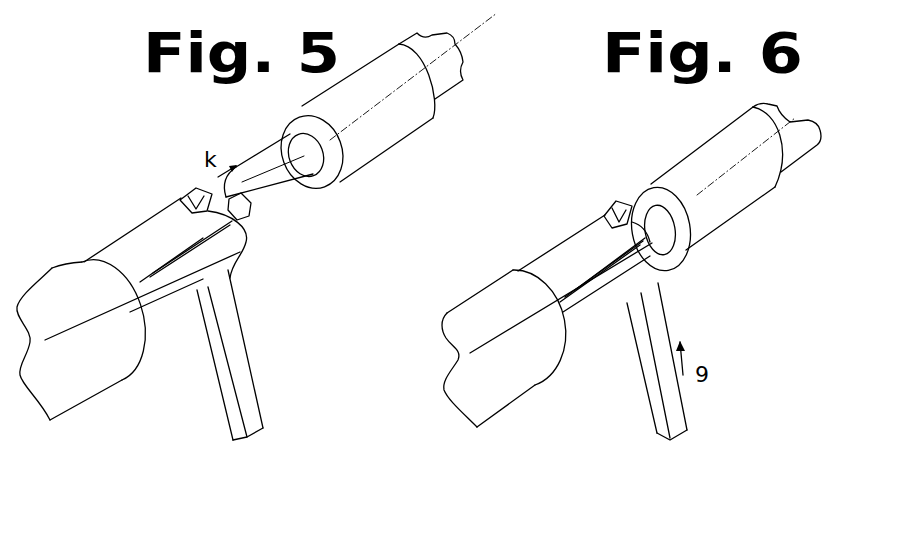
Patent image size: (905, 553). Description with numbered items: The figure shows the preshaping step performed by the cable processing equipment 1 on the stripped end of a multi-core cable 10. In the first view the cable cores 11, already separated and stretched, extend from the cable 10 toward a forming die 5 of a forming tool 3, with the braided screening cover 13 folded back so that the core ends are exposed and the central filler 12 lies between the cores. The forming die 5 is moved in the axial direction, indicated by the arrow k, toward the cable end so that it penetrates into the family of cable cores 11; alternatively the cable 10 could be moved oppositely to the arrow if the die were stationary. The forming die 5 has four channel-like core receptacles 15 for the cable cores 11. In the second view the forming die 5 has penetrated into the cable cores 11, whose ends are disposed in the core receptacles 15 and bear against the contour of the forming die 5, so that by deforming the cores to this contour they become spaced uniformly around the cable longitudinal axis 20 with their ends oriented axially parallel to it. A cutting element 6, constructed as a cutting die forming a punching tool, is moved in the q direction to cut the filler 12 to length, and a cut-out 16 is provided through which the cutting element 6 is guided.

In FIG. 5, the cable processing equipment 1 is at (79, 143).
In FIG. 6, the cable processing equipment 1 is at (548, 165).
In FIG. 5, the forming tool 3 is at (52, 267).
In FIG. 6, the forming tool 3 is at (473, 292).
In FIG. 5, the forming die 5 is at (133, 243).
In FIG. 6, the forming die 5 is at (553, 256).
In FIG. 5, the cutting element 6 is at (243, 360).
In FIG. 6, the cutting element 6 is at (683, 407).
In FIG. 5, the cable 10 is at (305, 104).
In FIG. 6, the cable 10 is at (687, 153).
In FIG. 5, the cable cores 11 is at (264, 190).
In FIG. 6, the cable cores 11 is at (672, 262).
In FIG. 5, the filler 12 is at (250, 218).
In FIG. 5, the braided screening cover 13 is at (398, 122).
In FIG. 6, the braided screening cover 13 is at (750, 190).
In FIG. 5, the core receptacles 15 is at (157, 286).
In FIG. 6, the core receptacles 15 is at (593, 283).
In FIG. 5, the cut-out 16 is at (185, 198).
In FIG. 6, the cut-out 16 is at (620, 202).
In FIG. 5, the cable longitudinal axis 20 is at (481, 24).
In FIG. 6, the cable longitudinal axis 20 is at (803, 117).